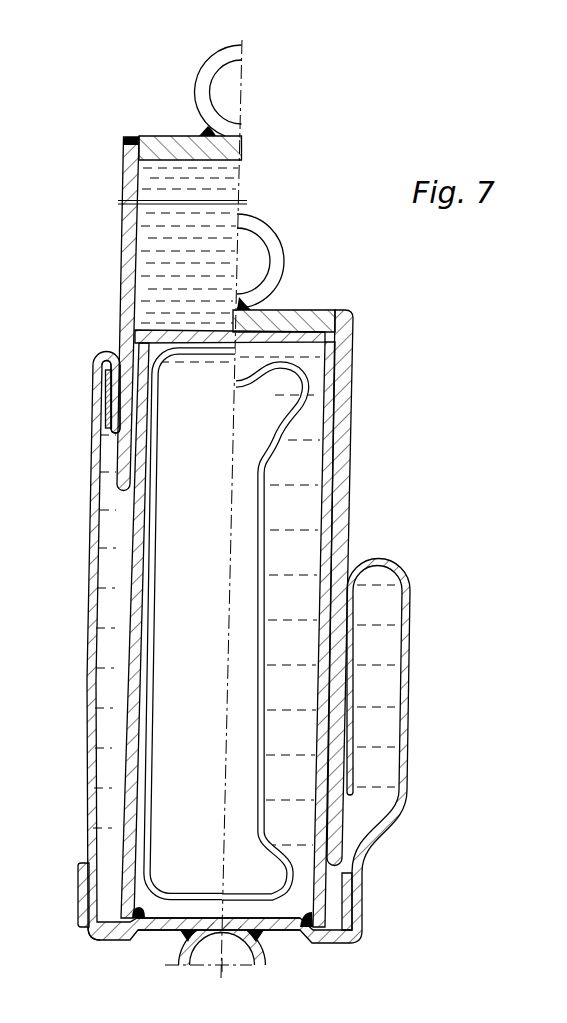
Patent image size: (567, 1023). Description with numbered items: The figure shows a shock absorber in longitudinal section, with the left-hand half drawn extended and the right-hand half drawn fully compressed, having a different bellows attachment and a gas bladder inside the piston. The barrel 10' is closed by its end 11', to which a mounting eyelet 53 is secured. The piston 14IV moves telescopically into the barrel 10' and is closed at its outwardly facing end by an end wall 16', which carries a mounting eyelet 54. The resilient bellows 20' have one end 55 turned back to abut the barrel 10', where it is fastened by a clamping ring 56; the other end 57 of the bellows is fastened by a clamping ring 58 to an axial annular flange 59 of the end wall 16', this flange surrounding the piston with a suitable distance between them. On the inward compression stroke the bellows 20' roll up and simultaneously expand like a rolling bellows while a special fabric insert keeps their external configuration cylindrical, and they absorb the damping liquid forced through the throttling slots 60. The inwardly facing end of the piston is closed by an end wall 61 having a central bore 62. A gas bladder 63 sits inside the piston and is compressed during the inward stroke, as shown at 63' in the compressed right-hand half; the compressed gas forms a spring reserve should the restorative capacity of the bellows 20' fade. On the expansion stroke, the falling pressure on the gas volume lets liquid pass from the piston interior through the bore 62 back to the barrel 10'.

The mounting eyelet 53 is at (237, 53).
The end of the barrel 11' is at (214, 149).
The barrel 10' is at (241, 501).
The central bore 62 is at (230, 330).
The end wall 61 is at (307, 331).
The gas bladder 63 is at (191, 624).
The compressed gas bladder 63' is at (315, 628).
The throttling slots 60 is at (135, 487).
The end of the bellows 55 is at (108, 377).
The clamping ring 56 is at (108, 413).
The resilient bellows 20' is at (251, 648).
The piston 14IV is at (127, 853).
The clamping ring 58 is at (78, 889).
The other end of the bellows 57 is at (88, 936).
The mounting eyelet 54 is at (179, 953).
The end wall 16' is at (228, 950).
The axial annular flange 59 is at (346, 899).